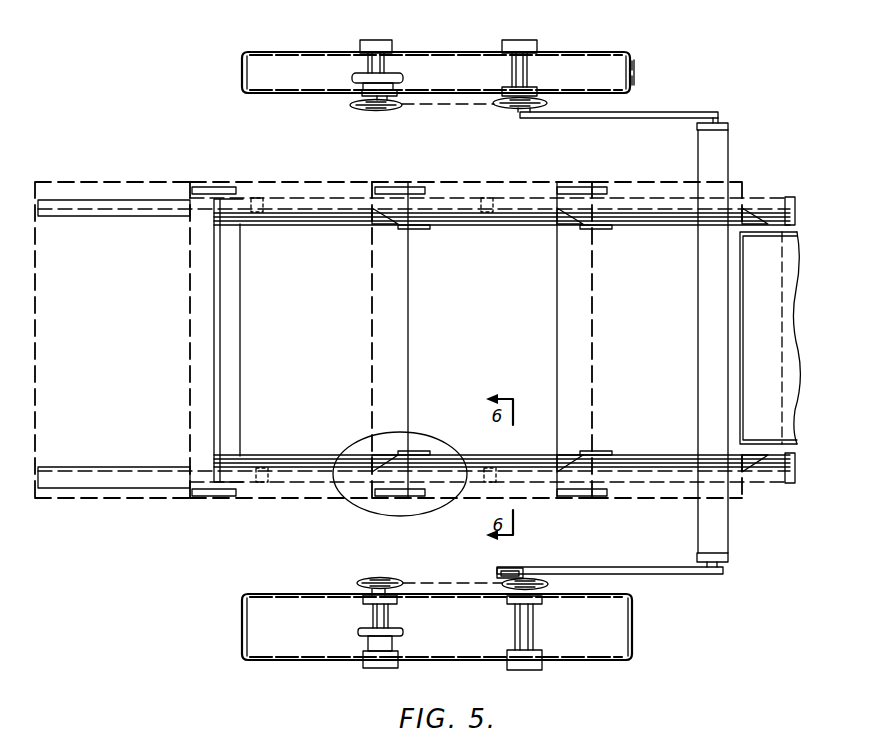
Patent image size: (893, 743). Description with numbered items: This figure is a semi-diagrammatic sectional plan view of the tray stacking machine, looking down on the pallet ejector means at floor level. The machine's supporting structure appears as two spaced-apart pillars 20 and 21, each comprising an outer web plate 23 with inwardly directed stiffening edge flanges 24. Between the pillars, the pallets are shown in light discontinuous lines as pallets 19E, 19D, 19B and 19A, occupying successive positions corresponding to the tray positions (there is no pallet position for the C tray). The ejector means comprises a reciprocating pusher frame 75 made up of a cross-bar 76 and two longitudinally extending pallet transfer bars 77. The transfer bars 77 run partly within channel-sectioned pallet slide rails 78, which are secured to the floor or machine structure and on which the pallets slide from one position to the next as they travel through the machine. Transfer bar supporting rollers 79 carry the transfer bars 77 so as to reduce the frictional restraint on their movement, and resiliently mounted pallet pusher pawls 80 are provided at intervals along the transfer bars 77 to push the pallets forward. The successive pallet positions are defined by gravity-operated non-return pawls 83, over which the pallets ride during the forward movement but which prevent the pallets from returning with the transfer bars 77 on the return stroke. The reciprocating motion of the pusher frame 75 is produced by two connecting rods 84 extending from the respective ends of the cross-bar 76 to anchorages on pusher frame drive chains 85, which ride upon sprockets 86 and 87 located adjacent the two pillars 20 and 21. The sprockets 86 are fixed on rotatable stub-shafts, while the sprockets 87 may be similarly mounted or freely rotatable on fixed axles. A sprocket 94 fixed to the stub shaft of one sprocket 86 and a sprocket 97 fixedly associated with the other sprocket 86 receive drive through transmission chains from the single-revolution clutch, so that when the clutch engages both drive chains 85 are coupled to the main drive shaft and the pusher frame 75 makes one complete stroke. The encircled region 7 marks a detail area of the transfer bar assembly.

The pillar 20 is at (640, 61).
The pillar 21 is at (650, 636).
The outer web plate 23 is at (285, 53).
The stiffening edge flange 24 is at (242, 78).
The sprocket 97 is at (398, 74).
The sprocket 86 is at (376, 111).
The pusher frame drive chain 85 is at (455, 106).
The connecting rod 84 is at (653, 118).
The cross-bar 76 is at (722, 523).
The sprocket 94 is at (372, 632).
The sprocket 87 is at (526, 580).
The pallet 19E is at (112, 340).
The pallet 19D is at (281, 340).
The pallet 19B is at (482, 340).
The pallet 19A is at (696, 340).
The pallet transfer bar 77 is at (333, 226).
The pallet slide rail 78 is at (118, 200).
The non-return pawl 83 is at (207, 187).
The transfer bar supporting roller 79 is at (258, 197).
The pallet pusher pawl 80 is at (380, 223).
The detail circle 7 is at (345, 517).
The pusher frame 75 is at (236, 533).